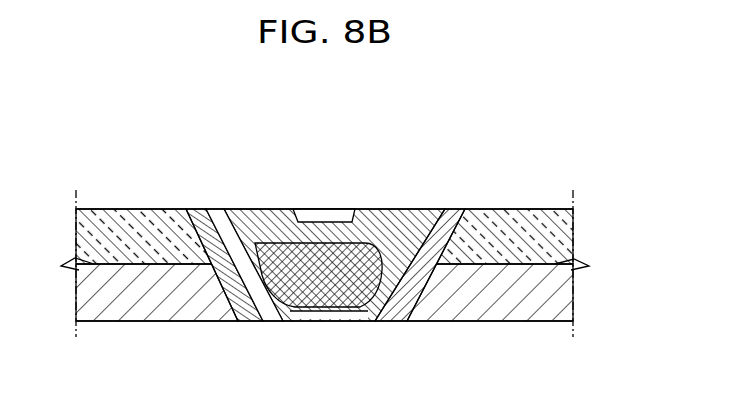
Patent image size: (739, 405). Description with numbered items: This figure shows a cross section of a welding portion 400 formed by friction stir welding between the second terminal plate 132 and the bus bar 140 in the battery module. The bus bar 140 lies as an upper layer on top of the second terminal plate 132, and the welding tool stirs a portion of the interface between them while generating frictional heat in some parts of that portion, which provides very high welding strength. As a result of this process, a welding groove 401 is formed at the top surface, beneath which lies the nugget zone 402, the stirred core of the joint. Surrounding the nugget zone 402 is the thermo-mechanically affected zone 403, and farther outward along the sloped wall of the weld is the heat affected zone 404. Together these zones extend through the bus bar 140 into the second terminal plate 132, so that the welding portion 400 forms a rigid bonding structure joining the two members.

The welding portion 400 is at (258, 186).
The welding groove 401 is at (324, 228).
The nugget zone 402 is at (370, 218).
The thermo-mechanically affected zone 403 is at (417, 223).
The heat affected zone 404 is at (256, 306).
The bus bar 140 is at (513, 222).
The second terminal plate 132 is at (523, 307).